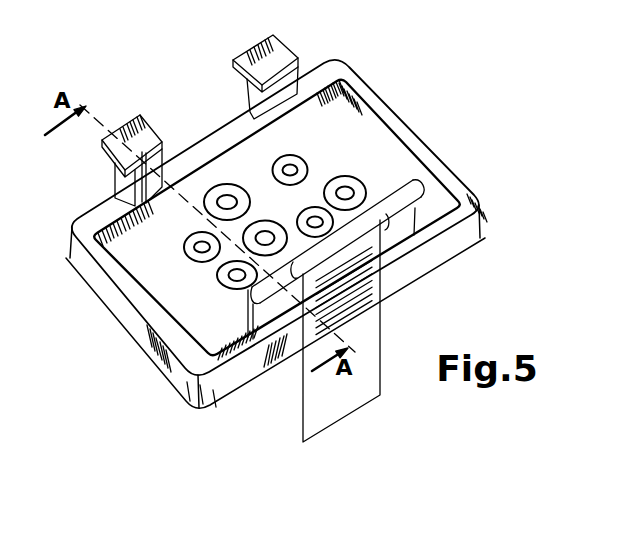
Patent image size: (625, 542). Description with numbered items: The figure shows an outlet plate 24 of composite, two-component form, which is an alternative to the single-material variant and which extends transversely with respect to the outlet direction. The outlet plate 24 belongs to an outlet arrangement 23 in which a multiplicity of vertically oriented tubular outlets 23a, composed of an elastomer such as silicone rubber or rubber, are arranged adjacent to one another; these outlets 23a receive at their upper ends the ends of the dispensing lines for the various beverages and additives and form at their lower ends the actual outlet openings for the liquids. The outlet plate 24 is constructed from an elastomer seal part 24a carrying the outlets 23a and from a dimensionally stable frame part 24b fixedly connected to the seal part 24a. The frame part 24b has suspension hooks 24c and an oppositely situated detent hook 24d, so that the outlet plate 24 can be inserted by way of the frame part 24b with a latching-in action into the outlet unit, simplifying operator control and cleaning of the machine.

The outlet arrangement 23 is at (182, 273).
The tubular outlets 23a is at (291, 168).
The outlet plate 24 is at (118, 358).
The elastomer seal part 24a is at (110, 240).
The frame part 24b is at (384, 109).
The suspension hooks 24c is at (265, 48).
The detent hook 24d is at (352, 277).